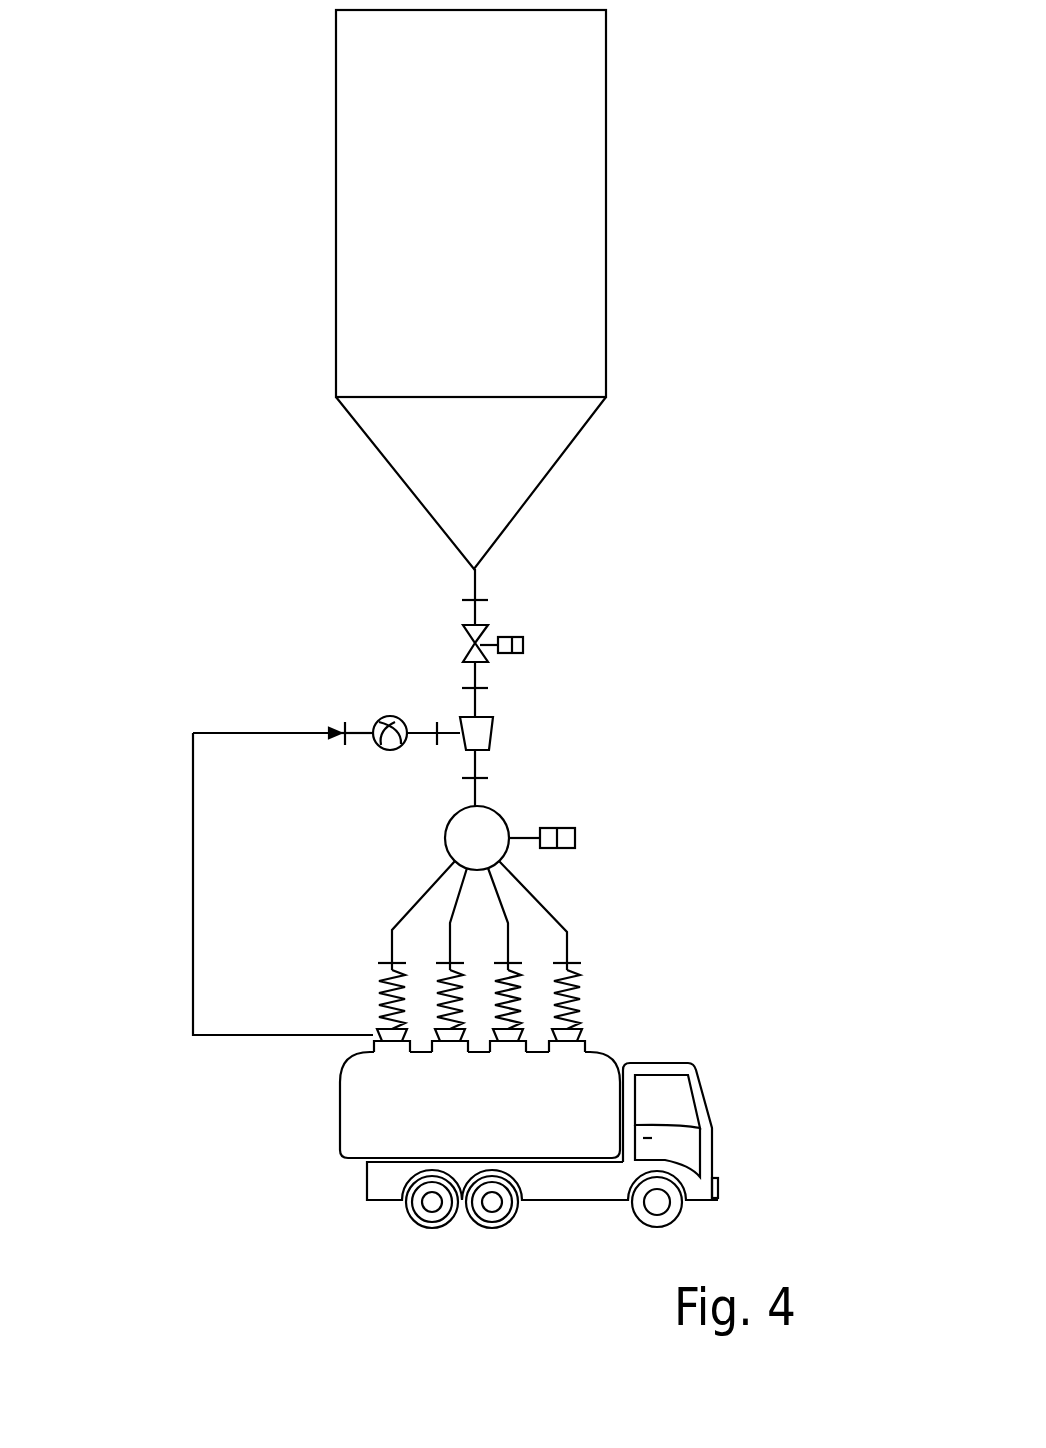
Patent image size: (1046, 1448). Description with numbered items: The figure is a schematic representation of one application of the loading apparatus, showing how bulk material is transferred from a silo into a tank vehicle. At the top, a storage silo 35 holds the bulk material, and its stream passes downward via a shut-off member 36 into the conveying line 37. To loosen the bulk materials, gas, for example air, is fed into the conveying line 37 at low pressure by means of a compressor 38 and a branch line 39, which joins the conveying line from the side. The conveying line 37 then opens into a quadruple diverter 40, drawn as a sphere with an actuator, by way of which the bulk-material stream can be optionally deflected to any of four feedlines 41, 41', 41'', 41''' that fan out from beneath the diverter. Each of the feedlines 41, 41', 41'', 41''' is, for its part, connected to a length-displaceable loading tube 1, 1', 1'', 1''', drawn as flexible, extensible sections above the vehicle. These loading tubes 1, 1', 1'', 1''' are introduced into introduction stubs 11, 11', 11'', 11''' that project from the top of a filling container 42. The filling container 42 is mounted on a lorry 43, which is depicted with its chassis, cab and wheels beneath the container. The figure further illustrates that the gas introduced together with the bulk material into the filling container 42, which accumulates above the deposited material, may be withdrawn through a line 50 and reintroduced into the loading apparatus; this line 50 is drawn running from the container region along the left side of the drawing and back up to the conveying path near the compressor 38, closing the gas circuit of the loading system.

The storage silo 35 is at (487, 195).
The shut-off member 36 is at (471, 626).
The conveying line 37 is at (481, 701).
The compressor 38 is at (382, 721).
The branch line 39 is at (431, 737).
The quadruple diverter 40 is at (492, 829).
The feedline 41 is at (540, 915).
The feedline 41' is at (491, 919).
The feedline 41'' is at (434, 919).
The feedline 41''' is at (399, 915).
The length-displaceable loading tube 1 is at (556, 1005).
The length-displaceable loading tube 1' is at (495, 1005).
The length-displaceable loading tube 1'' is at (435, 1005).
The length-displaceable loading tube 1''' is at (371, 1005).
The introduction stub 11 is at (567, 1069).
The introduction stub 11' is at (508, 1069).
The introduction stub 11'' is at (449, 1069).
The introduction stub 11''' is at (386, 1069).
The filling container 42 is at (495, 1135).
The lorry 43 is at (470, 1240).
The line 50 is at (193, 886).